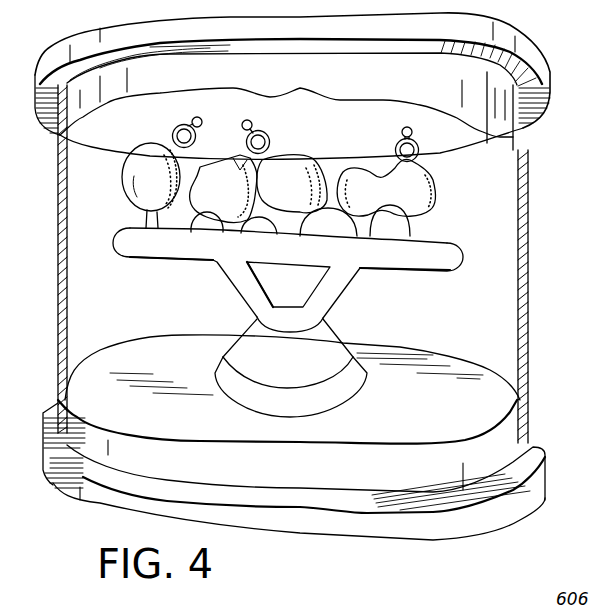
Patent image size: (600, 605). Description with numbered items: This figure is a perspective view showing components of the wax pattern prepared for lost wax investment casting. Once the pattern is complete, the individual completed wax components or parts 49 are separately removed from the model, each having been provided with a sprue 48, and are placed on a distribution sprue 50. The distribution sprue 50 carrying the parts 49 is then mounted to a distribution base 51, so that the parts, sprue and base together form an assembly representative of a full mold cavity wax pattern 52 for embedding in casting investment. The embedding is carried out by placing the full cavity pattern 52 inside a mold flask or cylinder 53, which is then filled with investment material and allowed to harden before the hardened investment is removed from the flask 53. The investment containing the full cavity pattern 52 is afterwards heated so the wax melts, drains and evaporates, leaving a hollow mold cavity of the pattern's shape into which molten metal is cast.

The sprue 48 is at (153, 213).
The wax component 49 is at (117, 193).
The distribution sprue 50 is at (397, 260).
The distribution base 51 is at (410, 404).
The full mold cavity wax pattern 52 is at (468, 223).
The mold flask 53 is at (529, 278).